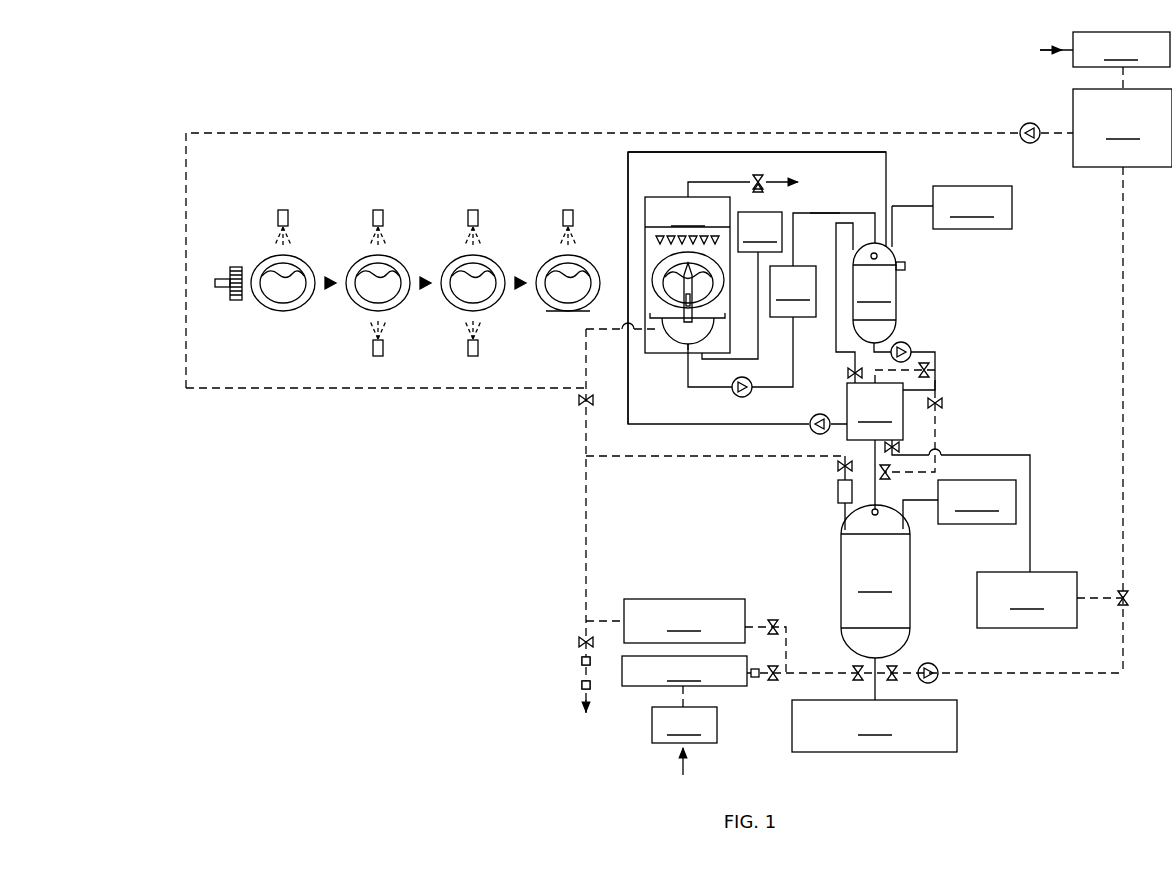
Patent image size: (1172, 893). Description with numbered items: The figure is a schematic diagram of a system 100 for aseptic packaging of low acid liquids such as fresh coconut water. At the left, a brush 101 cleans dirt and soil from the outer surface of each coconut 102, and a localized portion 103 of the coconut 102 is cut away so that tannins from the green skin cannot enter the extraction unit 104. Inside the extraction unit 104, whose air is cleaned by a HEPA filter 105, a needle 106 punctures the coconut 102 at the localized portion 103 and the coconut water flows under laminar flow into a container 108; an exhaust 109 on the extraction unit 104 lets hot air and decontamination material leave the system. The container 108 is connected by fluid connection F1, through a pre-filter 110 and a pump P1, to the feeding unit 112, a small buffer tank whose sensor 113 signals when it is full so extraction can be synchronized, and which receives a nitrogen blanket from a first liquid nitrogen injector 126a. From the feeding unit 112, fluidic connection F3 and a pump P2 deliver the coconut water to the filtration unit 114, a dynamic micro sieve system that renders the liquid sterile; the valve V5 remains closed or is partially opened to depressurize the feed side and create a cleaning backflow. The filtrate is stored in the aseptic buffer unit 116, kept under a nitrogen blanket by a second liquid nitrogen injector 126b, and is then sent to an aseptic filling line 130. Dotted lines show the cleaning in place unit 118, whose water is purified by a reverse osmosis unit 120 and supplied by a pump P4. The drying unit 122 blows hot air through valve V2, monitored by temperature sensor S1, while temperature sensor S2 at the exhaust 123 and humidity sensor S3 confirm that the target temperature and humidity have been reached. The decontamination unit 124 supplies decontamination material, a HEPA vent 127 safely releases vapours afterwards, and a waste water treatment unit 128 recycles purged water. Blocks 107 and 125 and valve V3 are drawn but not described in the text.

The system 100 is at (228, 66).
The brush 101 is at (222, 278).
The coconut 102 is at (262, 254).
The localized portion 103 is at (566, 313).
The extraction unit 104 is at (659, 195).
The HEPA filter 105 is at (687, 275).
The needle 106 is at (690, 290).
The controller unit 107 is at (760, 232).
The container 108 is at (676, 336).
The exhaust 109 is at (758, 175).
The pre-filter 110 is at (793, 291).
The feeding unit 112 is at (874, 293).
The sensor 113 is at (905, 266).
The filtration unit 114 is at (875, 411).
The aseptic buffer unit 116 is at (875, 581).
The automatic cleaning in place (CIP) unit 118 is at (1122, 128).
The reverse osmosis (RO) unit 120 is at (1121, 49).
The drying unit 122 is at (684, 671).
The exhaust 123 is at (580, 717).
The decontamination unit 124 is at (684, 621).
The water supply 125 is at (684, 725).
The first liquid nitrogen injector 126a is at (972, 207).
The second liquid nitrogen injector 126b is at (977, 502).
The HEPA vent 127 is at (838, 490).
The waste water treatment unit 128 is at (1027, 600).
The aseptic filling line 130 is at (874, 726).
The fluid connection F1 is at (824, 210).
The fluidic connection F3 is at (938, 385).
The pump P1 is at (746, 396).
The pump P2 is at (903, 342).
The pump P4 is at (1028, 122).
The temperature sensor S1 is at (753, 680).
The temperature sensor S2 is at (582, 661).
The humidity sensor S3 is at (582, 685).
The valve V2 is at (773, 683).
The valve V3 is at (773, 618).
The valve V5 is at (930, 362).